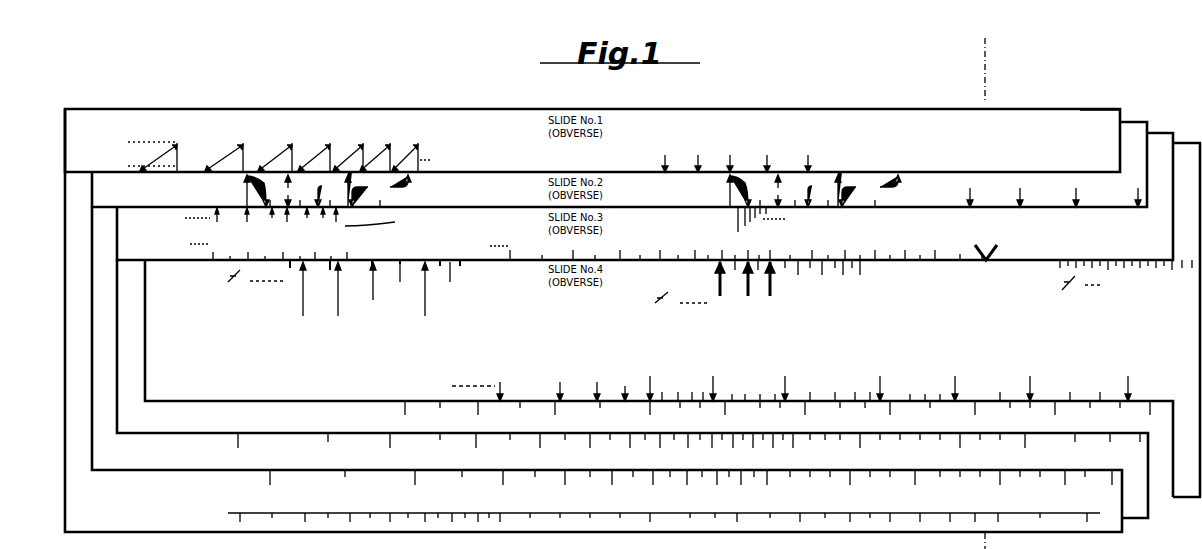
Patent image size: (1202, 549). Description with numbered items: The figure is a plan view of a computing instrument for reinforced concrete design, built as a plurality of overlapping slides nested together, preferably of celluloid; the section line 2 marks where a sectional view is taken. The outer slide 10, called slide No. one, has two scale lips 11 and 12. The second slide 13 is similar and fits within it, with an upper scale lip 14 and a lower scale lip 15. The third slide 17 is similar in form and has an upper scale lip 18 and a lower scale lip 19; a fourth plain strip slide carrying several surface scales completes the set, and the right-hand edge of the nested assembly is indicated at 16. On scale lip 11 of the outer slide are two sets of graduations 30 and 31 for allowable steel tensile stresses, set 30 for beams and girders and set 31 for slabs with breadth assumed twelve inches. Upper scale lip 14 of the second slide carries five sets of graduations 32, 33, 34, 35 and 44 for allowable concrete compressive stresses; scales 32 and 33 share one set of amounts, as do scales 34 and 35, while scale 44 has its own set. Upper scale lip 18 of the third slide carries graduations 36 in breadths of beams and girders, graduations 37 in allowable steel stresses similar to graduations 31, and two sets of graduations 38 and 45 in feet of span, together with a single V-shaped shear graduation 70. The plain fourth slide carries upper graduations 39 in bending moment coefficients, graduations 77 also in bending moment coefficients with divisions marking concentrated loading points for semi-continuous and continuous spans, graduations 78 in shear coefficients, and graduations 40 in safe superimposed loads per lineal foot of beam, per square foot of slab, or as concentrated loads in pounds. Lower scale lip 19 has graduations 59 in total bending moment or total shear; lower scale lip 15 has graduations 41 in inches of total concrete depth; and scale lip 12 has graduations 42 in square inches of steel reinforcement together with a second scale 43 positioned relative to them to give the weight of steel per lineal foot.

The section line 2 is at (948, 58).
The outer slide 10 is at (1108, 111).
The scale lip 11 is at (1098, 168).
The scale lip 12 is at (1122, 520).
The second slide 13 is at (1140, 129).
The upper scale lip 14 is at (1140, 192).
The lower scale lip 15 is at (1142, 450).
The body 16 is at (1178, 148).
The third slide 17 is at (1163, 139).
The upper scale lip 18 is at (1168, 224).
The lower scale lip 19 is at (1168, 398).
The graduations 30 is at (372, 138).
The graduations 31 is at (790, 138).
The graduations 32 is at (380, 180).
The graduations 33 is at (410, 186).
The graduations 34 is at (898, 176).
The graduations 35 is at (862, 186).
The graduations 36 is at (380, 221).
The graduations 37 is at (735, 216).
The graduations 38 is at (472, 240).
The upper graduations 39 is at (870, 274).
The graduations 40 is at (372, 378).
The graduations 41 is at (168, 456).
The graduations 42 is at (166, 482).
The second scale 43 is at (166, 520).
The graduations 44 is at (945, 200).
The graduations 45 is at (360, 248).
The graduations 59 is at (395, 410).
The shear graduation 70 is at (1003, 248).
The graduations 77 is at (450, 278).
The graduations 78 is at (1048, 280).